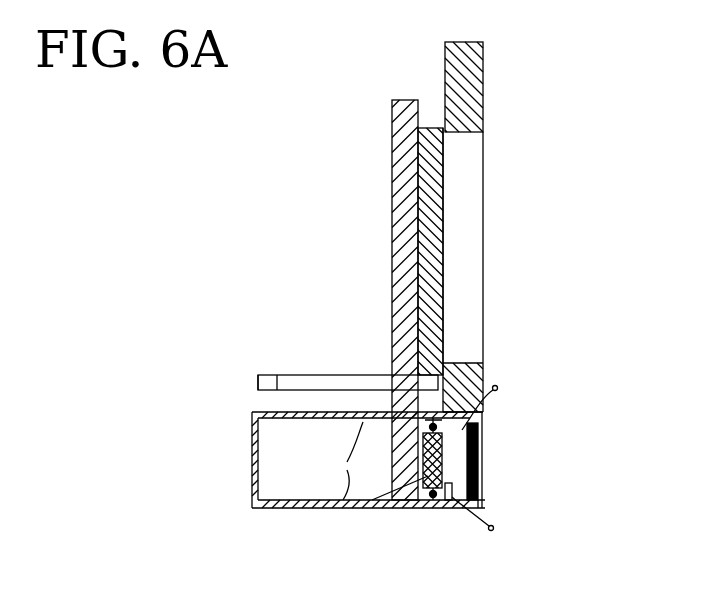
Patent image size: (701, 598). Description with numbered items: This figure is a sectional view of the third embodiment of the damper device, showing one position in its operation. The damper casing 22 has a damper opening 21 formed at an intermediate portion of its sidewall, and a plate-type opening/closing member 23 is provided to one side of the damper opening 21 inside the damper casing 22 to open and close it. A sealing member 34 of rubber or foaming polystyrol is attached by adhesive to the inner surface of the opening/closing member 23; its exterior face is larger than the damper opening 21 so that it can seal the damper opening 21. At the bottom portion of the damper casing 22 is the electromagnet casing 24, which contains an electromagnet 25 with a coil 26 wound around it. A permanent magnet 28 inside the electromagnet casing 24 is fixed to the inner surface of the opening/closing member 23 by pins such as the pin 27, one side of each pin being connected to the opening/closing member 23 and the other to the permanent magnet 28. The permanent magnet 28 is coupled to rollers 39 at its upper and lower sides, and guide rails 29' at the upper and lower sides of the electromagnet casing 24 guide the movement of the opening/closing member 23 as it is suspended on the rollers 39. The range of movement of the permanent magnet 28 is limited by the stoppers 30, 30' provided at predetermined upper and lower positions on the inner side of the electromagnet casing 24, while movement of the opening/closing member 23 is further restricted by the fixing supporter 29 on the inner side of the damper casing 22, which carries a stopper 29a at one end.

The damper opening 21 is at (483, 313).
The damper casing 22 is at (445, 67).
The opening/closing member 23 is at (392, 150).
The electromagnet casing 24 is at (252, 455).
The electromagnet 25 is at (482, 475).
The coil 26 is at (462, 505).
The pin 27 is at (373, 505).
The permanent magnet 28 is at (415, 507).
The fixing supporter 29 is at (348, 353).
The stopper 29a is at (268, 375).
The guide rail 29' is at (328, 461).
The stopper 30 is at (527, 461).
The stopper 30' is at (536, 503).
The sealing member 34 is at (437, 210).
The roller 39 is at (482, 427).